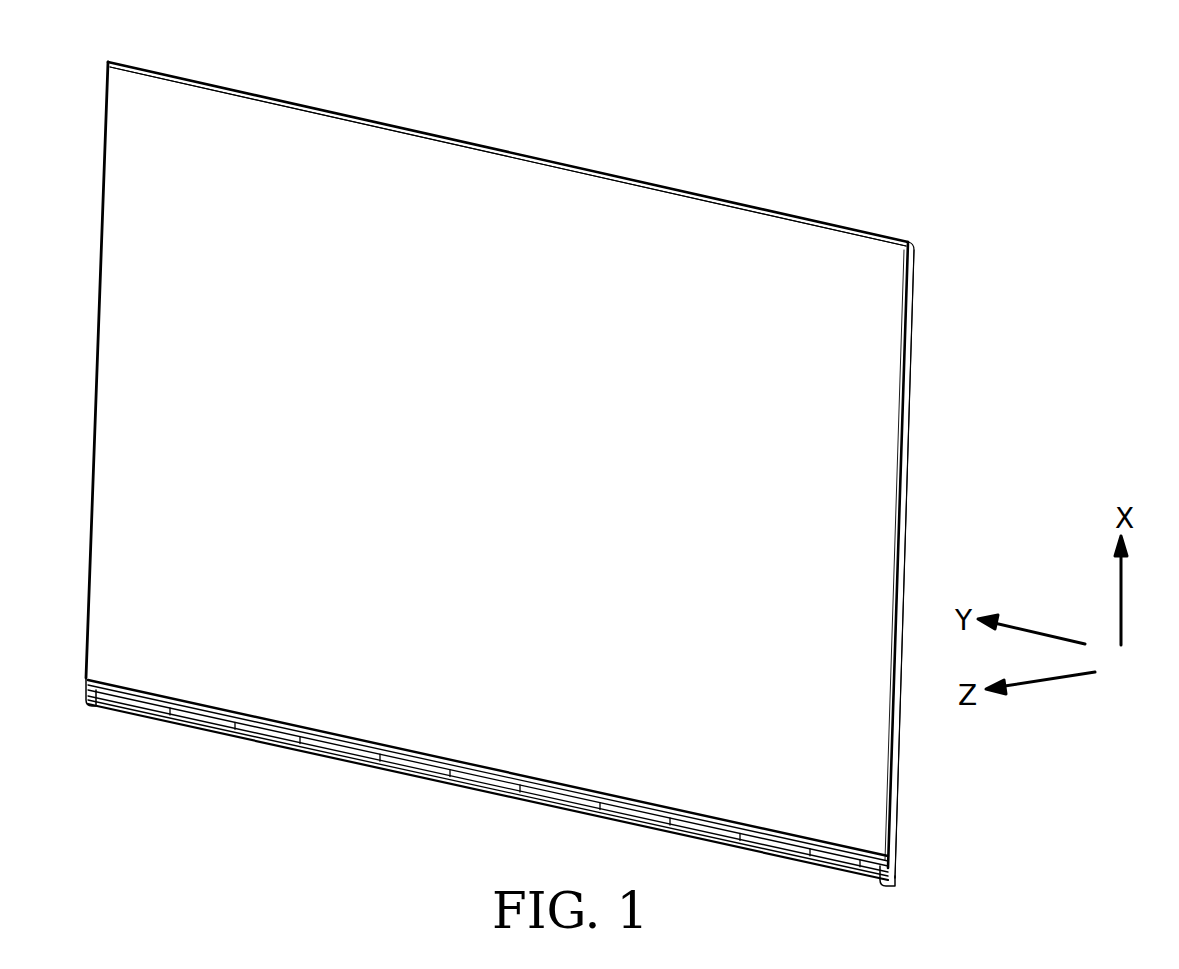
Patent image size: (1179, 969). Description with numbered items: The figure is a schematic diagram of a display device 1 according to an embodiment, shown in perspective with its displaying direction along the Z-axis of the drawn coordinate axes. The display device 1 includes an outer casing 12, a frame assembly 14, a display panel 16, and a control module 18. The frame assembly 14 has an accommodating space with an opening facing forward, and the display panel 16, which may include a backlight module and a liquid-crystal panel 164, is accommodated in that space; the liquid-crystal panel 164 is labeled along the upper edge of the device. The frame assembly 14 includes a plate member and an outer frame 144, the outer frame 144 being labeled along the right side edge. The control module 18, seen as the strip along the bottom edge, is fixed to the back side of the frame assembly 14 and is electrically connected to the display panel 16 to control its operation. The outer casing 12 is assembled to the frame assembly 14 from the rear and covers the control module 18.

The display device 1 is at (795, 88).
The outer casing 12 is at (908, 450).
The frame assembly 14 is at (904, 564).
The outer frame 144 is at (895, 707).
The display panel 16 is at (508, 156).
The liquid-crystal panel 164 is at (878, 340).
The control module 18 is at (273, 725).